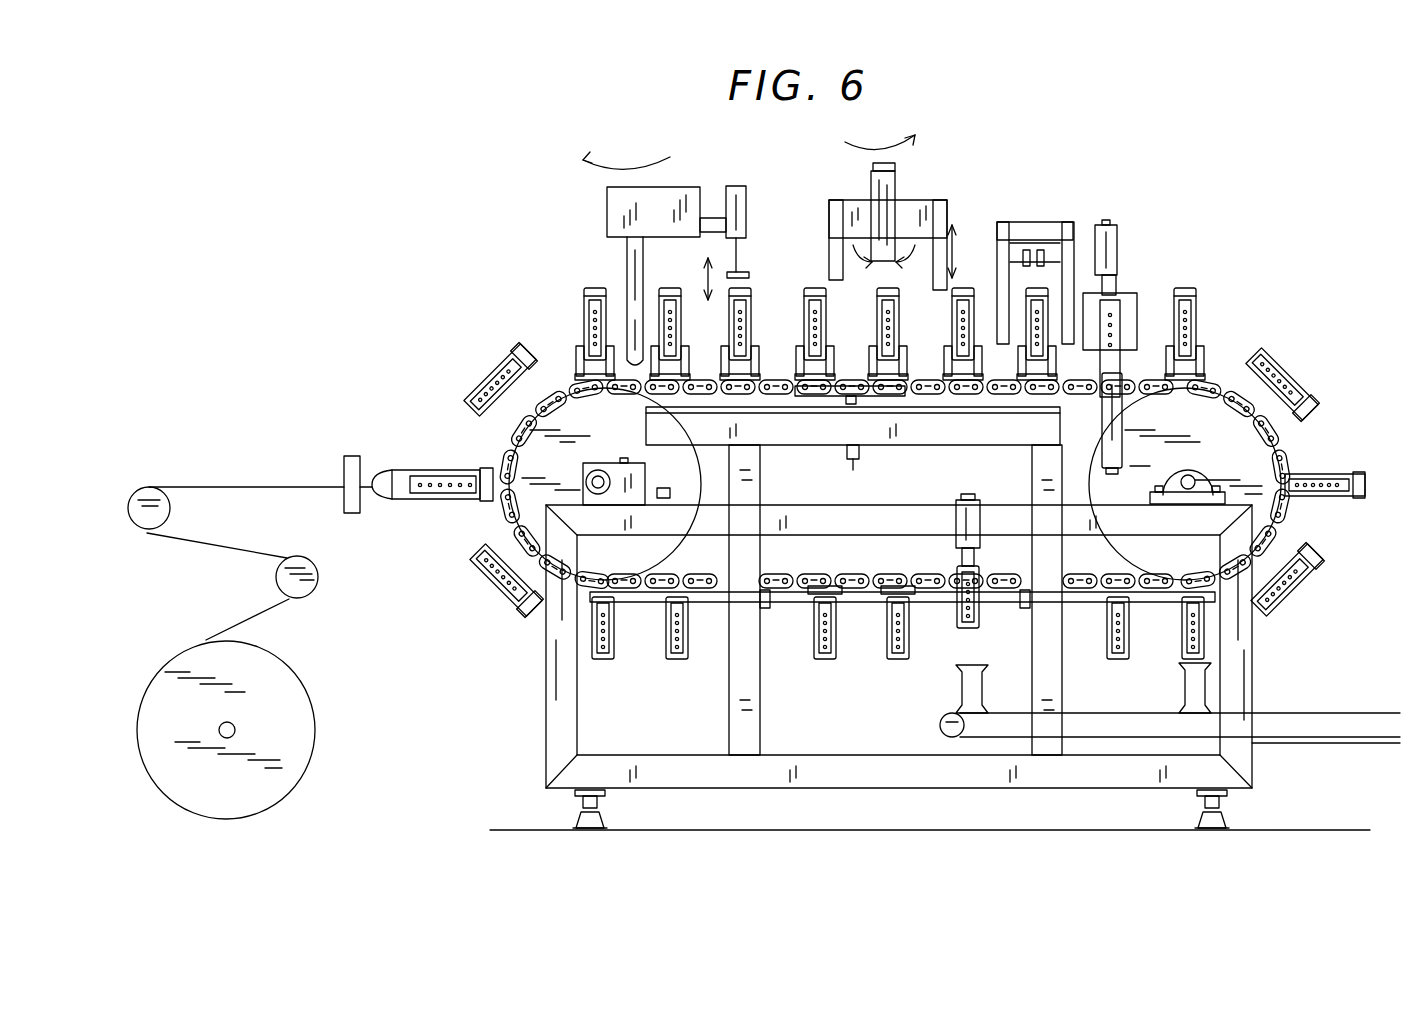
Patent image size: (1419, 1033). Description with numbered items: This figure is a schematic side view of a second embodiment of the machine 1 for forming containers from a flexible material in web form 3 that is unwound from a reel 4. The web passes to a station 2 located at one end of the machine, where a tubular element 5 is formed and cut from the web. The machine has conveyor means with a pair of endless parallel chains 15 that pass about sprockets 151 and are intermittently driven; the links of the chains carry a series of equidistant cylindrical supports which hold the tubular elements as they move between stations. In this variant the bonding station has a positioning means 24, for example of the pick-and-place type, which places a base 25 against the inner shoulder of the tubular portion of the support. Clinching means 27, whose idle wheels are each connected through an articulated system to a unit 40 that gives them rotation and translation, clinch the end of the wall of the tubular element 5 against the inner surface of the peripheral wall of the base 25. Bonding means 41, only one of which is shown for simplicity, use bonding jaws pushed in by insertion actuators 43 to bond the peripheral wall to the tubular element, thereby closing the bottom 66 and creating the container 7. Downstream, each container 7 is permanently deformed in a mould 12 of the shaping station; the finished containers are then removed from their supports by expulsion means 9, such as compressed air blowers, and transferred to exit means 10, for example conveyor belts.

The machine 1 is at (250, 693).
The station for forming and cutting 2 is at (320, 325).
The flexible material in web form 3 is at (283, 605).
The reel 4 is at (302, 735).
The tubular element 5 is at (455, 476).
The container 7 is at (1180, 684).
The expulsion means 9 is at (948, 622).
The exit means 10 is at (1338, 740).
The mould 12 is at (1138, 296).
The endless parallel chains 15 is at (400, 513).
The positioning means 24 is at (607, 218).
The base 25 is at (748, 272).
The clinching means 27 is at (862, 190).
The unit 40 is at (900, 220).
The bonding means 41 is at (1045, 205).
The insertion actuators 43 is at (997, 250).
The bottom 66 is at (1040, 298).
The sprockets 151 is at (1215, 405).